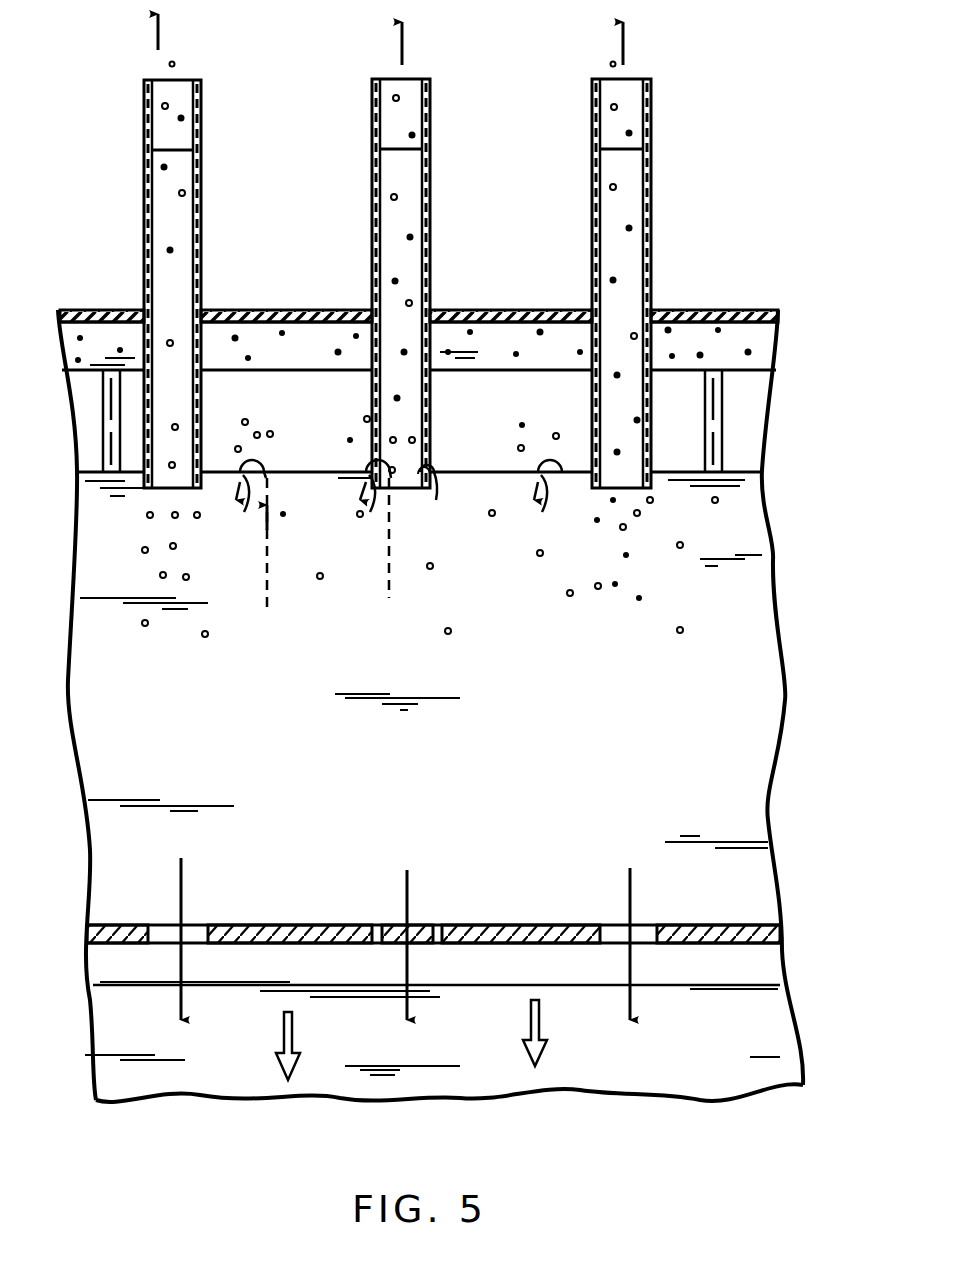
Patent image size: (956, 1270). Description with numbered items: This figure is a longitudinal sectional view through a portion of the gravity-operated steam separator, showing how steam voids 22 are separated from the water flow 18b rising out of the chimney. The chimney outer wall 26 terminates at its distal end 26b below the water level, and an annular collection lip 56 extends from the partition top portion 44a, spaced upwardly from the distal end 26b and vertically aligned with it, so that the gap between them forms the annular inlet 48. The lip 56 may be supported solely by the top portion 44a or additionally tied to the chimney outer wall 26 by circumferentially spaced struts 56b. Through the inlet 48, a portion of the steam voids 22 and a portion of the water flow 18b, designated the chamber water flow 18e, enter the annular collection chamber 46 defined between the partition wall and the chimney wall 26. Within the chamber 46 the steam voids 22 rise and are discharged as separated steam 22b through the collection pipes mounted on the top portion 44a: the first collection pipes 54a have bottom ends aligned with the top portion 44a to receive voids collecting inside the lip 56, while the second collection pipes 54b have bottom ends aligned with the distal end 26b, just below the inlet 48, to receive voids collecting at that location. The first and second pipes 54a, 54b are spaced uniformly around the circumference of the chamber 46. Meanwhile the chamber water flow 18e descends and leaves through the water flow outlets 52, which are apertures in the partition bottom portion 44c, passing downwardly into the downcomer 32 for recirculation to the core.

The water flow 18b is at (270, 587).
The chamber water flow 18e is at (381, 503).
The steam voids 22 is at (432, 330).
The separated steam 22b is at (158, 30).
The chimney outer wall 26 is at (735, 600).
The distal end 26b is at (444, 499).
The downcomer 32 is at (432, 969).
The top portion 44a is at (262, 310).
The bottom portion 44c is at (300, 925).
The collection chamber 46 is at (424, 664).
The inlet 48 is at (419, 451).
The water flow outlet 52 is at (202, 932).
The first collection pipes 54a is at (430, 215).
The second collection pipes 54b is at (201, 238).
The collection lip 56 is at (447, 370).
The struts 56b is at (722, 412).